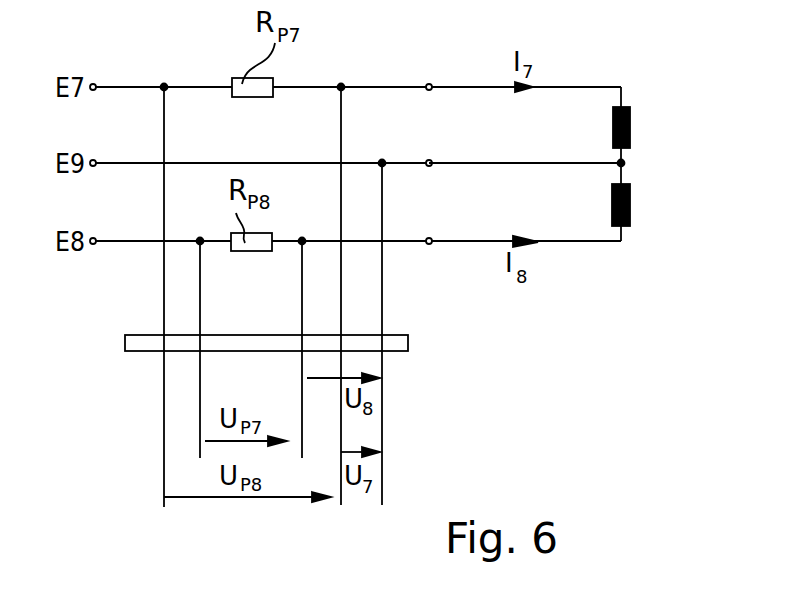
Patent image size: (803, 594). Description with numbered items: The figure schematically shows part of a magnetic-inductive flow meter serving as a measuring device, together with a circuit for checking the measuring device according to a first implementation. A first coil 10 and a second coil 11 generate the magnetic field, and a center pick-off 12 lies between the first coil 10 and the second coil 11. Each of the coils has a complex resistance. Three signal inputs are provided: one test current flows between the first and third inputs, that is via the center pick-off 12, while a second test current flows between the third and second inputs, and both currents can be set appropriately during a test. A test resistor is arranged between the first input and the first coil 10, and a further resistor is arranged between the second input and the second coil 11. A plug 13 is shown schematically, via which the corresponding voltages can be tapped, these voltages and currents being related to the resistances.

The first coil 10 is at (630, 128).
The second coil 11 is at (630, 203).
The center pick-off 12 is at (488, 162).
The plug 13 is at (408, 343).